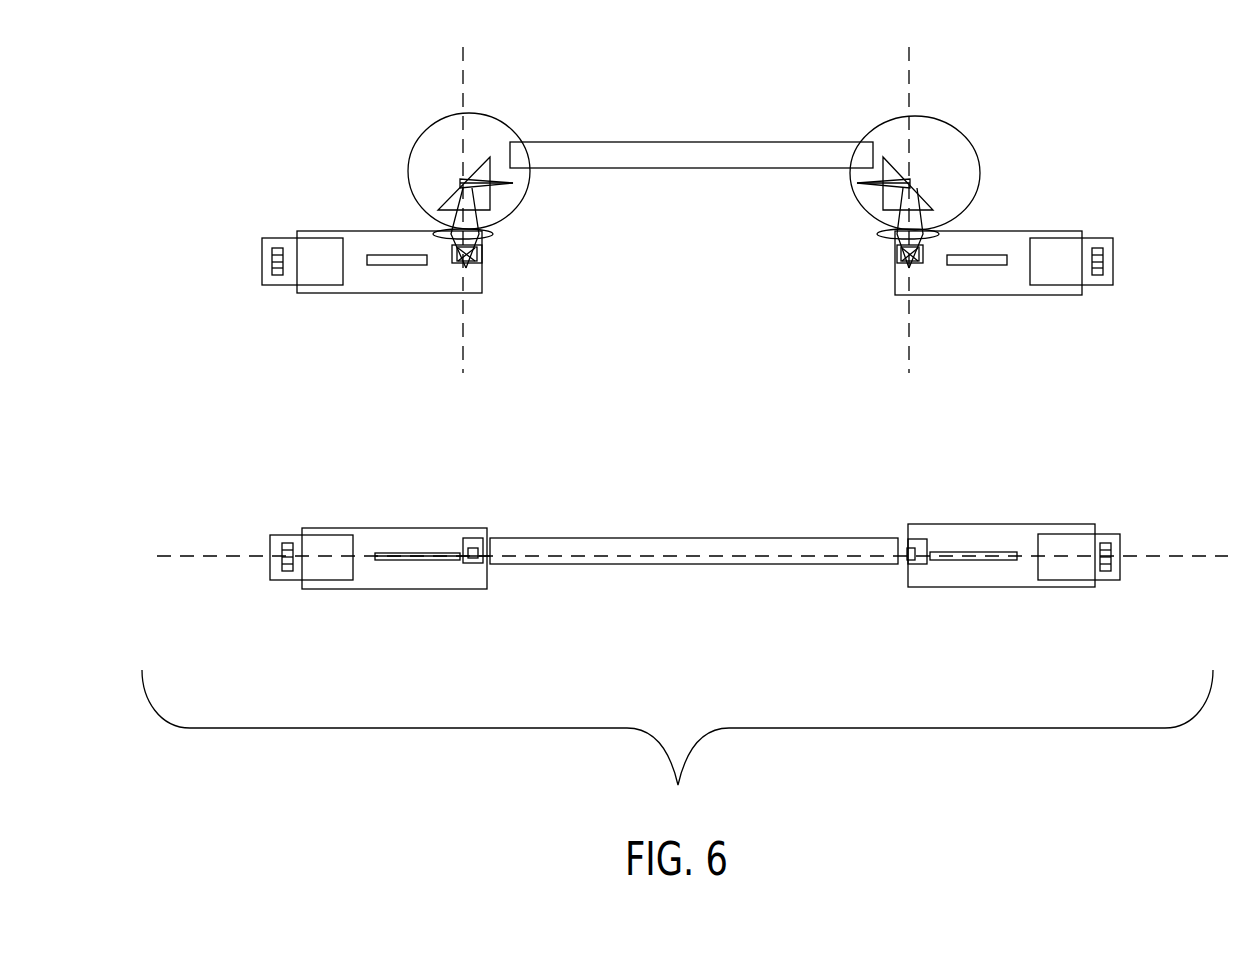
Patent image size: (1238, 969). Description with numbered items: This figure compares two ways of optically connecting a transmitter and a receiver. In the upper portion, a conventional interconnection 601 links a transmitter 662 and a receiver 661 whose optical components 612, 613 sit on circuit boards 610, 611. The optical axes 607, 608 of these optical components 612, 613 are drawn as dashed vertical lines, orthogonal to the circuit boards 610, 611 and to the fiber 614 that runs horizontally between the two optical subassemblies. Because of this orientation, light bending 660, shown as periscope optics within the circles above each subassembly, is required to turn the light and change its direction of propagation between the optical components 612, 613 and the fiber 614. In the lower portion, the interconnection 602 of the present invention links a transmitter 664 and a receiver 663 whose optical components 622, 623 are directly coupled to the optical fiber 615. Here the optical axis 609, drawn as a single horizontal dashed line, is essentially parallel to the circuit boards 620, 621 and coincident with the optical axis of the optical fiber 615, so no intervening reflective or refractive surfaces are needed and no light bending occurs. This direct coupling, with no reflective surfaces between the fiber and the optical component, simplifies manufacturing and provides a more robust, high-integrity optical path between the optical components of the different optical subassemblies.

The conventional interconnection 601 is at (652, 256).
The interconnection of the present invention 602 is at (673, 602).
The optical axis 607 is at (461, 73).
The optical axis 608 is at (906, 73).
The optical axis 609 is at (1200, 552).
The circuit board 610 is at (405, 266).
The circuit board 611 is at (982, 268).
The optical component 612 is at (475, 263).
The optical component 613 is at (902, 258).
The fiber 614 is at (625, 145).
The optical fiber 615 is at (543, 540).
The circuit board 620 is at (412, 562).
The circuit board 621 is at (957, 552).
The optical component 622 is at (470, 540).
The optical component 623 is at (918, 538).
The light bending 660 is at (485, 114).
The receiver 661 is at (1030, 298).
The transmitter 662 is at (343, 296).
The receiver 663 is at (1050, 588).
The transmitter 664 is at (343, 592).